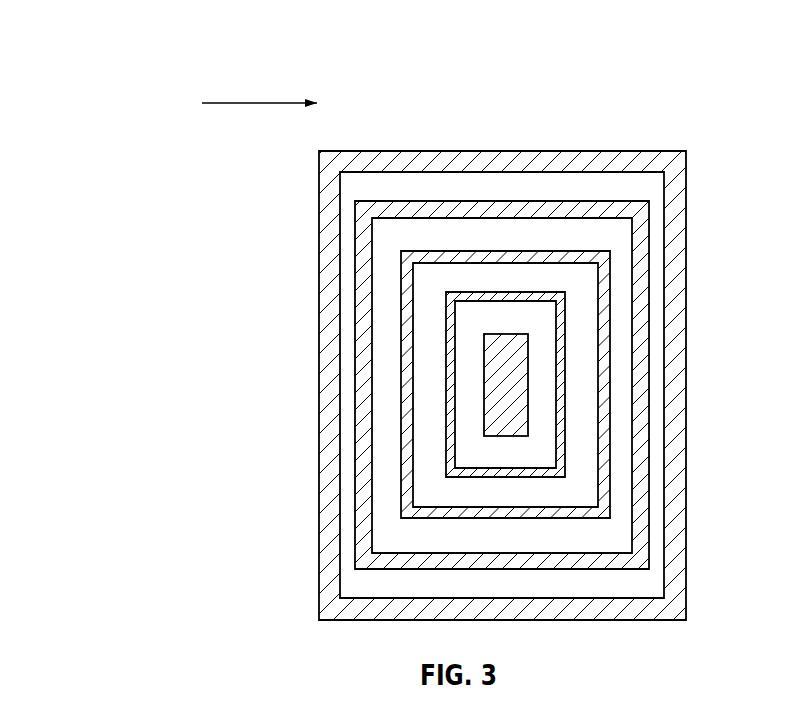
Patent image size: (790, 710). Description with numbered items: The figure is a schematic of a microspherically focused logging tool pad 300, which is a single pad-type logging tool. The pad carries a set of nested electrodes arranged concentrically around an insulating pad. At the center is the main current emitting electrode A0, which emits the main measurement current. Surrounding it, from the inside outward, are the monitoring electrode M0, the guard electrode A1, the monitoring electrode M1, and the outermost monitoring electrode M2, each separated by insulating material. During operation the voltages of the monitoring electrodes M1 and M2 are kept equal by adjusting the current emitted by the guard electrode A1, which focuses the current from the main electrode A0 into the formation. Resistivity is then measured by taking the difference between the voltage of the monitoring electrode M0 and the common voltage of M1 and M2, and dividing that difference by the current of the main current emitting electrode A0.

The microspherically focused logging tool pad 300 is at (112, 42).
The monitoring electrode M2 is at (318, 162).
The monitoring electrode M1 is at (354, 217).
The guard electrode A1 is at (400, 271).
The monitoring electrode M0 is at (445, 325).
The main current emitting electrode A0 is at (483, 380).